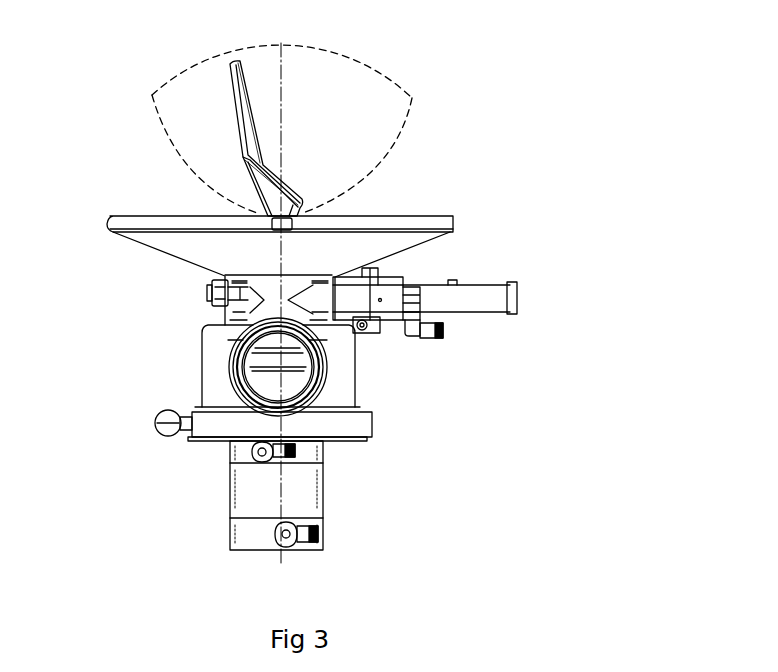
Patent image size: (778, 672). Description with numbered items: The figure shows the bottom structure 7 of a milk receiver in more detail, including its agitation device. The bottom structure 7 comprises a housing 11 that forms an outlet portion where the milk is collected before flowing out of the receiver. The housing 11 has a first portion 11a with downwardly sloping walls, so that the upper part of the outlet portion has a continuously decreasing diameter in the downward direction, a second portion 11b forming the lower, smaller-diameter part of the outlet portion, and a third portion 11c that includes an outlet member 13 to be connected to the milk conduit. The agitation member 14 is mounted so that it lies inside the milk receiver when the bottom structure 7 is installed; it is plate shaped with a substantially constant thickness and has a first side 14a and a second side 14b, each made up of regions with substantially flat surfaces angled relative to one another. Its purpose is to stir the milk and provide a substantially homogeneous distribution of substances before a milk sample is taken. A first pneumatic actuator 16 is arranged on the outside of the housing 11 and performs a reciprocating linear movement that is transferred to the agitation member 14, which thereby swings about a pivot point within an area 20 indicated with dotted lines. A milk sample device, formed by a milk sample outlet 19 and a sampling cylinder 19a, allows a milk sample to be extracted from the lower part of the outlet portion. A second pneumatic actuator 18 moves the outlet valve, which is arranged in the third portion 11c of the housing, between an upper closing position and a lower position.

The bottom structure 7 is at (103, 366).
The housing 11 is at (249, 302).
The first portion of the housing 11a is at (407, 230).
The second portion of the housing 11b is at (215, 287).
The third portion of the housing 11c is at (355, 387).
The outlet member 13 is at (240, 355).
The agitation member 14 is at (232, 87).
The first side of the agitation member 14a is at (257, 128).
The second side of the agitation member 14b is at (252, 172).
The first pneumatic actuator 16 is at (430, 280).
The second pneumatic actuator 18 is at (262, 512).
The milk sample outlet 19 is at (373, 328).
The sampling cylinder 19a is at (488, 300).
The area 20 is at (377, 72).